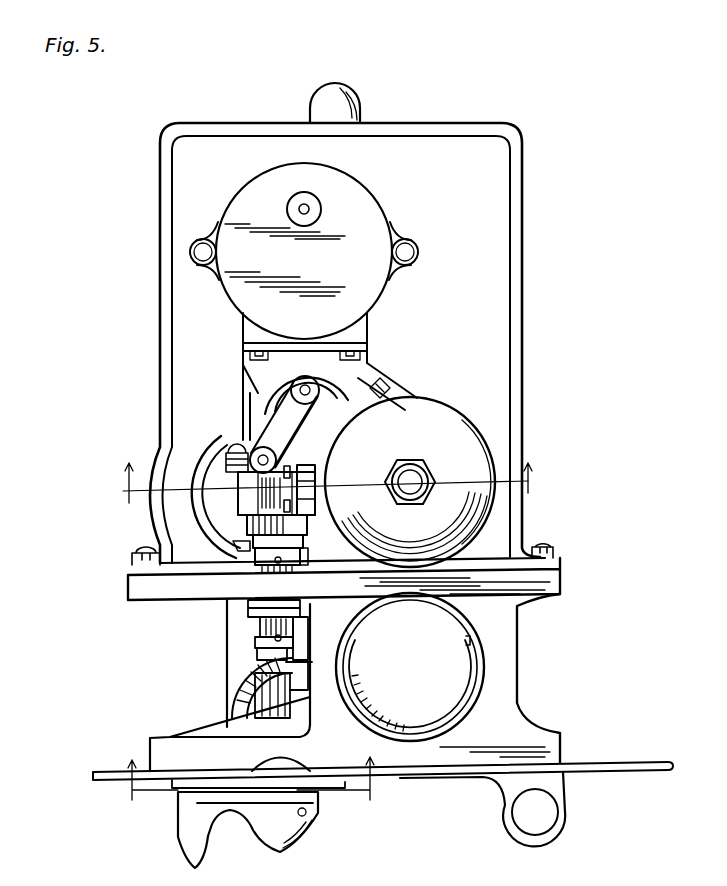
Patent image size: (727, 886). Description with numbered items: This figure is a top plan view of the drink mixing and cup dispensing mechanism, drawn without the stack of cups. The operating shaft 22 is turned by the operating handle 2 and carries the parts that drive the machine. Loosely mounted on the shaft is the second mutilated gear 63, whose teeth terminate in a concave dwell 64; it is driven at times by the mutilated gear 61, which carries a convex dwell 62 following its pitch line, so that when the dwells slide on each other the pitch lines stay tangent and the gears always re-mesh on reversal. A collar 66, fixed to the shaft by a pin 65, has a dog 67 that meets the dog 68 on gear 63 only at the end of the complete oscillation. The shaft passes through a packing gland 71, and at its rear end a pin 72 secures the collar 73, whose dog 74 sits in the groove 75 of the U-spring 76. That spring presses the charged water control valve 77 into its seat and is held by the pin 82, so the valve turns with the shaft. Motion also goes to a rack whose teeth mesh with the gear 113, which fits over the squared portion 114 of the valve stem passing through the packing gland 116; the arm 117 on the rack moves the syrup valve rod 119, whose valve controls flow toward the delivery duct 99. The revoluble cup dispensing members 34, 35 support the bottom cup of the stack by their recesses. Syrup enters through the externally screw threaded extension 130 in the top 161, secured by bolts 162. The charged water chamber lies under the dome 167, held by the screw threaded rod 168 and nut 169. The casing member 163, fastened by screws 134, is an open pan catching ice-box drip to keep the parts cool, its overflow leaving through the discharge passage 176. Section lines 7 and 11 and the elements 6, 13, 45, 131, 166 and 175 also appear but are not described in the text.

The operating handle 2 is at (190, 838).
The clamp strip 6 is at (180, 785).
The section line 7- 7 is at (325, 499).
The section line 11- 11 is at (249, 788).
The base 13 is at (297, 767).
The operating shaft 22 is at (248, 617).
The revoluble cup dispensing member 34 is at (350, 647).
The revoluble cup dispensing member 35 is at (470, 640).
The hook 45 is at (555, 802).
The mutilated gear 61 is at (237, 680).
The convex dwell 62 is at (235, 713).
The second mutilated gear 63 is at (253, 663).
The concave dwell 64 is at (300, 663).
The pin 65 is at (307, 632).
The collar 66 is at (258, 640).
The dog 67 is at (306, 645).
The dog 68 is at (258, 655).
The packing gland 71 is at (245, 610).
The pin 72 is at (283, 570).
The collar 73 is at (302, 568).
The dog 74 is at (248, 570).
The groove 75 is at (247, 546).
The U-spring 76 is at (215, 448).
The charged water control valve 77 is at (298, 527).
The pin 82 is at (243, 438).
The delivery duct 99 is at (266, 455).
The gear 113 is at (265, 507).
The squared portion 114 is at (250, 488).
The packing gland 116 is at (287, 469).
The arm 117 is at (283, 418).
The syrup valve rod 119 is at (314, 392).
The externally screw threaded extension 130 is at (308, 208).
The disc 131 is at (333, 376).
The screws 134 is at (124, 556).
The top 161 is at (386, 283).
The bolts 162 is at (221, 230).
The casing member 163 is at (161, 372).
The shaft 166 is at (316, 220).
The dome 167 is at (473, 410).
The screw threaded rod 168 is at (413, 477).
The nut 169 is at (410, 463).
The nut 175 is at (307, 481).
The discharge passage 176 is at (358, 103).